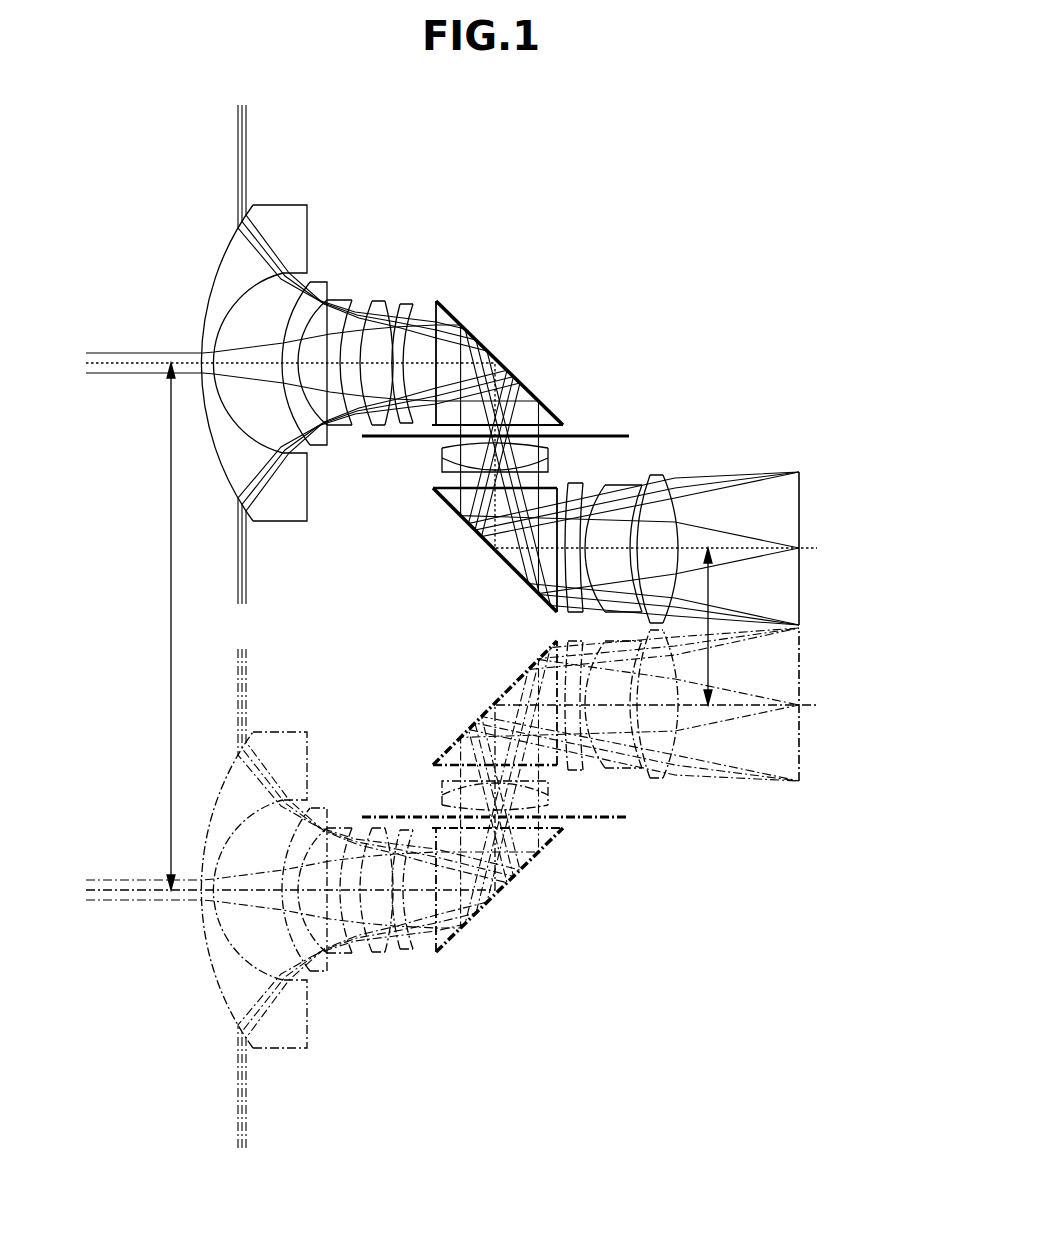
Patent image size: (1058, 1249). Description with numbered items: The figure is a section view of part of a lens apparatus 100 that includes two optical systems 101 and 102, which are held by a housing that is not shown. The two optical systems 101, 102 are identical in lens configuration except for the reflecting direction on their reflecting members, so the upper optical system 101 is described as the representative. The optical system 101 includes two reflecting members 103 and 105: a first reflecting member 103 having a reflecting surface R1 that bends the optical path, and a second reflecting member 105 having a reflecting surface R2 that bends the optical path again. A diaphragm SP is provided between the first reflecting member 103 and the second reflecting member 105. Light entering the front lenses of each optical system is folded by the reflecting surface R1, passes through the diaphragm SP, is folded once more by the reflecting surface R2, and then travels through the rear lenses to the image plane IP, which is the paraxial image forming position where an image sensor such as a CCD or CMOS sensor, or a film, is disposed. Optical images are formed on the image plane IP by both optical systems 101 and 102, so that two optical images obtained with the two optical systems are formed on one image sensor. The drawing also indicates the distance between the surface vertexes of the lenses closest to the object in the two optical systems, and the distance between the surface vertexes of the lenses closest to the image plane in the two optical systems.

The lens apparatus 100 is at (860, 142).
The optical system 101 is at (702, 177).
The optical system 102 is at (702, 1076).
The first reflecting member 103 is at (497, 354).
The second reflecting member 105 is at (474, 550).
The reflecting surface R1 is at (495, 363).
The reflecting surface R2 is at (497, 553).
The diaphragm SP is at (600, 435).
The image plane IP is at (803, 498).